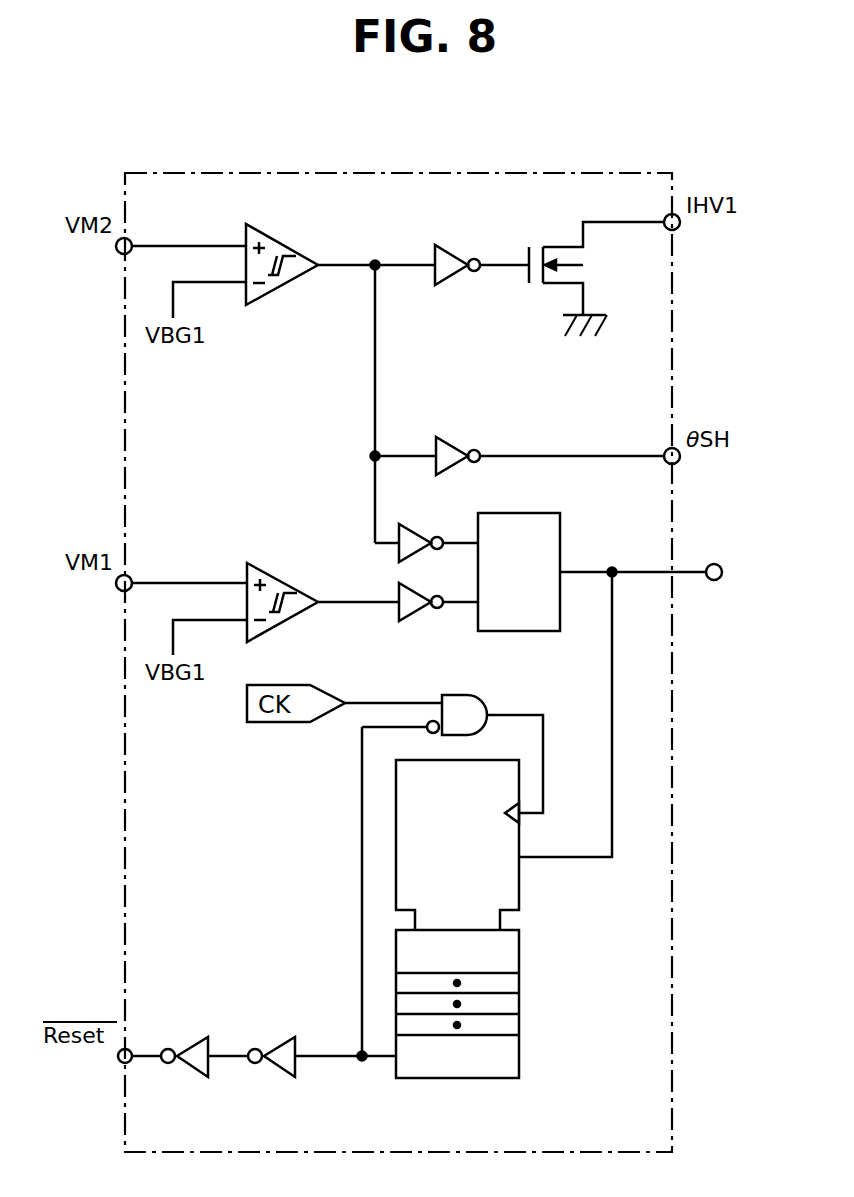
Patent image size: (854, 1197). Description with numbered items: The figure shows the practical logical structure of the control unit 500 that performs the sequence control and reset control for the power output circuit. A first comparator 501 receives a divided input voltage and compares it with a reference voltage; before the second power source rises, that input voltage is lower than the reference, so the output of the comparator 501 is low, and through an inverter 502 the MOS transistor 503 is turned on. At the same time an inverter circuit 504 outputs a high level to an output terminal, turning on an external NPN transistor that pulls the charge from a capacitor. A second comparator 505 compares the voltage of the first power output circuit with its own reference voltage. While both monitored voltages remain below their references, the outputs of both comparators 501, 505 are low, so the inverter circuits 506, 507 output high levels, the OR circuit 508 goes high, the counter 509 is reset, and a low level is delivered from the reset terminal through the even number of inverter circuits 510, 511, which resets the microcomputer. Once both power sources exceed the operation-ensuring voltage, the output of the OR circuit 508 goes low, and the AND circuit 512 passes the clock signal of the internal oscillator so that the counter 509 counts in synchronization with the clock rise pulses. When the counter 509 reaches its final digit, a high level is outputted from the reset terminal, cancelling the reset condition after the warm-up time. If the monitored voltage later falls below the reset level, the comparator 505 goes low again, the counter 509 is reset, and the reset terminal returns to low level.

The control unit 500 is at (531, 134).
The comparator 501 is at (302, 250).
The inverter 502 is at (452, 260).
The MOS transistor 503 is at (525, 278).
The inverter circuit 504 is at (452, 450).
The comparator 505 is at (305, 588).
The inverter circuit 506 is at (428, 532).
The inverter circuit 507 is at (418, 612).
The OR circuit 508 is at (538, 512).
The counter 509 is at (520, 890).
The inverter circuit 510 is at (282, 1072).
The inverter circuit 511 is at (194, 1072).
The AND circuit 512 is at (490, 704).